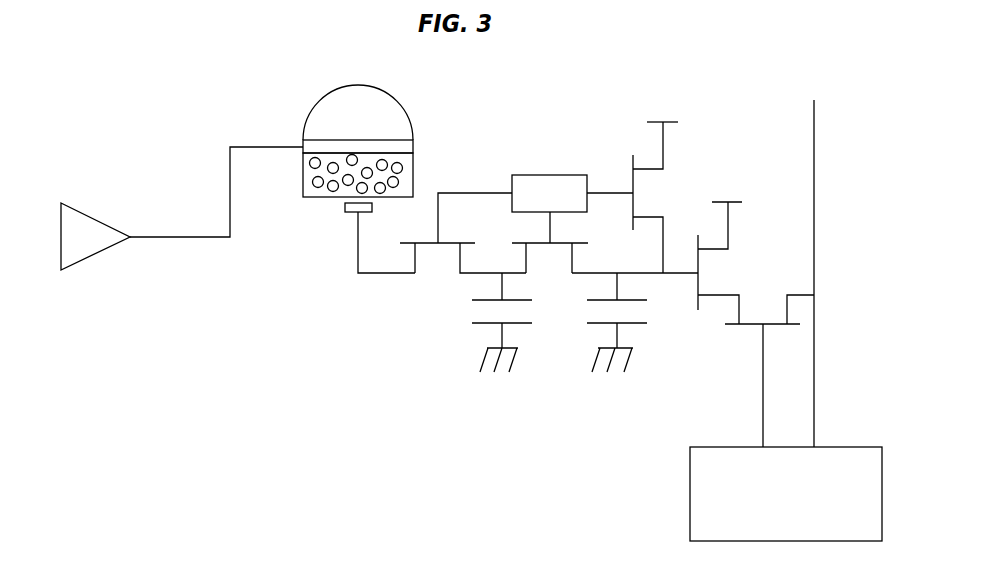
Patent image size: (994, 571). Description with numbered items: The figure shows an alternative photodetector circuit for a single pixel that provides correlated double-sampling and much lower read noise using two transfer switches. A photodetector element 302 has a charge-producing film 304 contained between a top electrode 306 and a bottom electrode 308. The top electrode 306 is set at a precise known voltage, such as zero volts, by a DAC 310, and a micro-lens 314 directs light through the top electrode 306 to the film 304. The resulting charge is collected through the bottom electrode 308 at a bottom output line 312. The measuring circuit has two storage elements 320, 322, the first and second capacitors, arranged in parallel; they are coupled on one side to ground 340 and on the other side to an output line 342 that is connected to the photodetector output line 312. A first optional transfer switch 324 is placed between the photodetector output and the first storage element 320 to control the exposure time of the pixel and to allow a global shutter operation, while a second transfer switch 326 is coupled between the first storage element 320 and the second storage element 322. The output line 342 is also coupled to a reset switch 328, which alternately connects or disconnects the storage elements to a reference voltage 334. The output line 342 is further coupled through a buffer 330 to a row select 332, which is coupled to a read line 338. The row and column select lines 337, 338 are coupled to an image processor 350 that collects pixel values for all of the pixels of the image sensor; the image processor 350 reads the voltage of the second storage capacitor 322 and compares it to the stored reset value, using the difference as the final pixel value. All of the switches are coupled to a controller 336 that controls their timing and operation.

The photodetector element 302 is at (299, 146).
The film 304 is at (413, 170).
The top electrode 306 is at (417, 147).
The bottom electrode 308 is at (348, 213).
The DAC 310 is at (93, 255).
The output line 312 is at (378, 276).
The micro-lens 314 is at (332, 112).
The first storage element 320 is at (478, 325).
The second storage element 322 is at (637, 300).
The first transfer switch 324 is at (447, 243).
The second transfer switch 326 is at (563, 243).
The reset switch 328 is at (664, 140).
The buffer 330 is at (699, 258).
The row select 332 is at (752, 328).
The reference voltage 334 is at (650, 122).
The controller 336 is at (554, 175).
The row select line 337 is at (762, 411).
The read line 338 is at (815, 425).
The ground 340 is at (630, 360).
The output line 342 is at (598, 273).
The image processor 350 is at (801, 519).